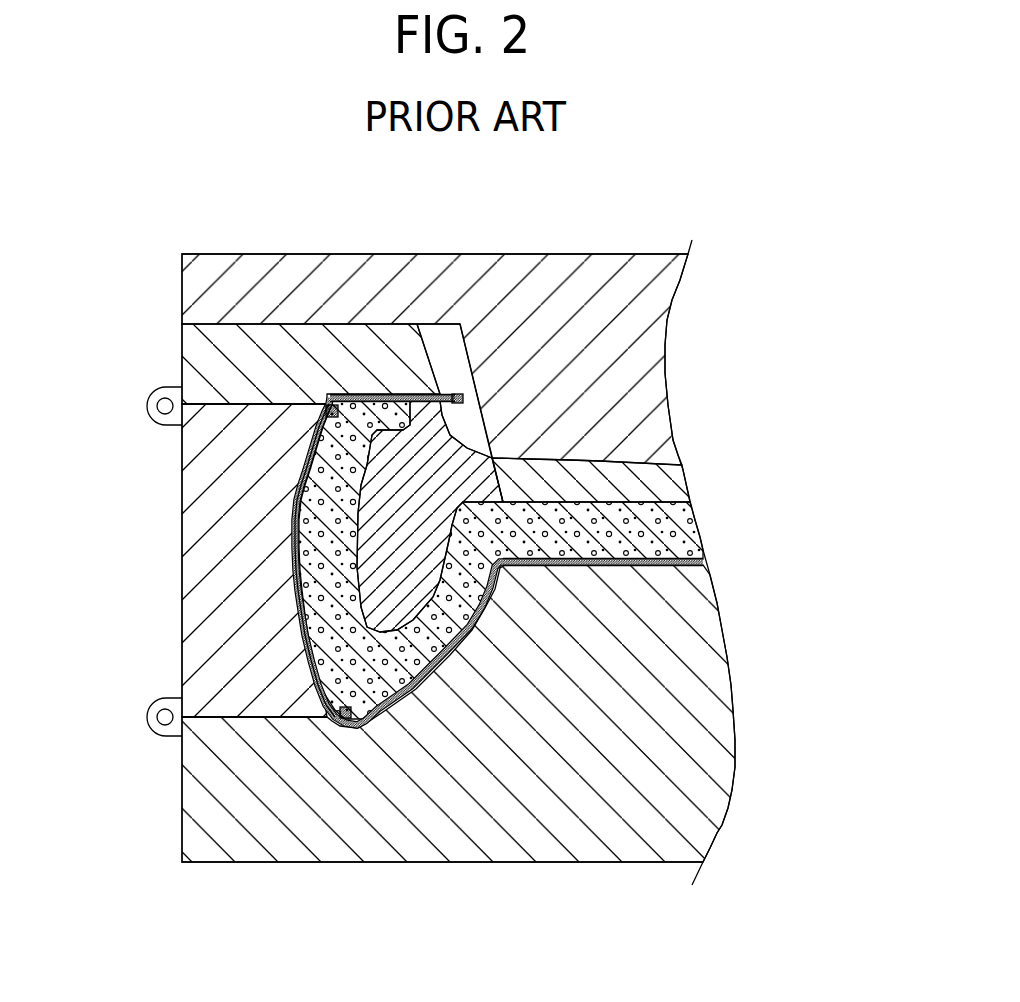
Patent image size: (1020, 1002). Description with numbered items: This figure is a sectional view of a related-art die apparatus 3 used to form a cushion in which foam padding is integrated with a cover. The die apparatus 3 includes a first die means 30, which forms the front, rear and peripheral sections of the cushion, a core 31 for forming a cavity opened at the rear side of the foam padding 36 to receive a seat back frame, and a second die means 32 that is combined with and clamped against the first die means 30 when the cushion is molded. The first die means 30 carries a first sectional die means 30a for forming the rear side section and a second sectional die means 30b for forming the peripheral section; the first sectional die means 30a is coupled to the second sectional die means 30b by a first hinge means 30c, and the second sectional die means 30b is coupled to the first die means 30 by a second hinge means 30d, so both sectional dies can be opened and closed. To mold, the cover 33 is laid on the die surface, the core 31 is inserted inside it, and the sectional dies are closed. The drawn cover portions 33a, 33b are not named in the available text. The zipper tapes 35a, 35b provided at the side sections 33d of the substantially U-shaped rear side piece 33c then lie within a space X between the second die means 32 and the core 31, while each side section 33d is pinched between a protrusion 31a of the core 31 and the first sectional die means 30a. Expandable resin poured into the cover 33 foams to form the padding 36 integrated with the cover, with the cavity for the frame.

The die apparatus 3 is at (243, 253).
The first die means 30 is at (546, 780).
The first sectional die means 30a is at (197, 352).
The second sectional die means 30b is at (183, 479).
The first hinge means 30c is at (147, 405).
The second hinge means 30d is at (147, 717).
The core 31 is at (688, 484).
The protrusion 31a is at (443, 418).
The second die means 32 is at (618, 253).
The cover 33 is at (618, 566).
The outer flat covering layer 33a is at (660, 566).
The side covering layer 33b is at (295, 525).
The rear side piece 33c is at (350, 394).
The side sections 33d is at (414, 428).
The zipper tape 35a is at (460, 392).
The zipper tape 35b is at (647, 404).
The foam padding 36 is at (700, 531).
The space X is at (473, 353).